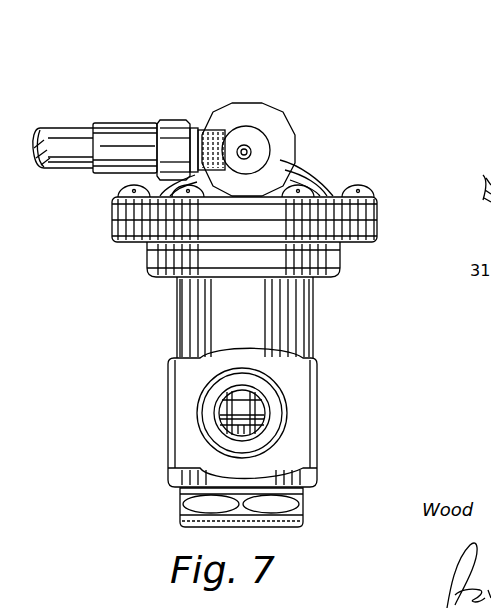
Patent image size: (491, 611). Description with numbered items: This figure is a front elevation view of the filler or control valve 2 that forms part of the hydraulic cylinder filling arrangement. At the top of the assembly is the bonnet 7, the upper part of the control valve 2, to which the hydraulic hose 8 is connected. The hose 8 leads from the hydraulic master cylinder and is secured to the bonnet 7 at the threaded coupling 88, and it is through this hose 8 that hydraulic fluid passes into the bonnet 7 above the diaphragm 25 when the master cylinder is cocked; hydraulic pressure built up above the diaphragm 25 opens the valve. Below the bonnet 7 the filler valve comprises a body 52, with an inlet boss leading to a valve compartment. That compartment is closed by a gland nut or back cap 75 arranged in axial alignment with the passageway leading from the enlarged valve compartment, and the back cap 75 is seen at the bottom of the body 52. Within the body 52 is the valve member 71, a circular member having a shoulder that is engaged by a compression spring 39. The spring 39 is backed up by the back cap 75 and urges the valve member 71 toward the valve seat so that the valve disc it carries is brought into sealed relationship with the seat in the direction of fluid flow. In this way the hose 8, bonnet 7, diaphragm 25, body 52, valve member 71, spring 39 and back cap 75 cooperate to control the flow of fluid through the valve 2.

The hydraulic hose 8 is at (73, 132).
The threaded coupling 88 is at (267, 125).
The bonnet 7 is at (313, 180).
The diaphragm 25 is at (380, 222).
The control valve 2 is at (188, 320).
The body 52 is at (313, 333).
The valve member 71 is at (253, 407).
The compression spring 39 is at (258, 423).
The gland nut or back cap 75 is at (197, 503).